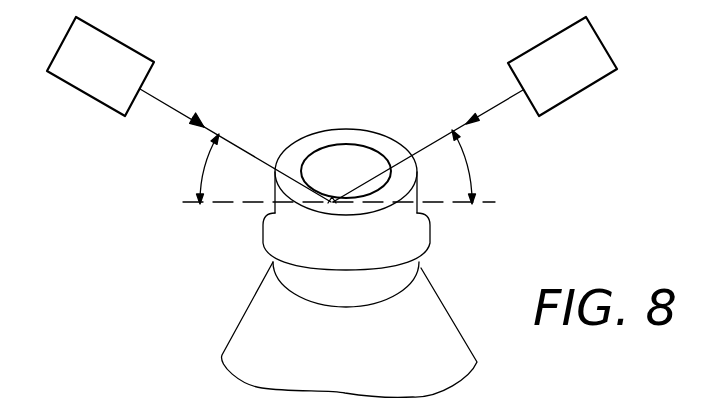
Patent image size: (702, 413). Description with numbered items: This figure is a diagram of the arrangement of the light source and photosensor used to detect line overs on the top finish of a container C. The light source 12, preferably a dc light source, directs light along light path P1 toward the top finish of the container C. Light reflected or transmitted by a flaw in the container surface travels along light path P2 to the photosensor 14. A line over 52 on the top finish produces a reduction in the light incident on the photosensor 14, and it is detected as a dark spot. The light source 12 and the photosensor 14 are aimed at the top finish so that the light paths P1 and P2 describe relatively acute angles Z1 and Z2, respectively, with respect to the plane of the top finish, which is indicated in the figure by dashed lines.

The light source 12 is at (572, 79).
The photosensor 14 is at (101, 76).
The line over 52 is at (331, 201).
The container C is at (245, 333).
The light path P1 is at (494, 107).
The light path P2 is at (172, 108).
The angle Z1 is at (479, 167).
The angle Z2 is at (213, 169).